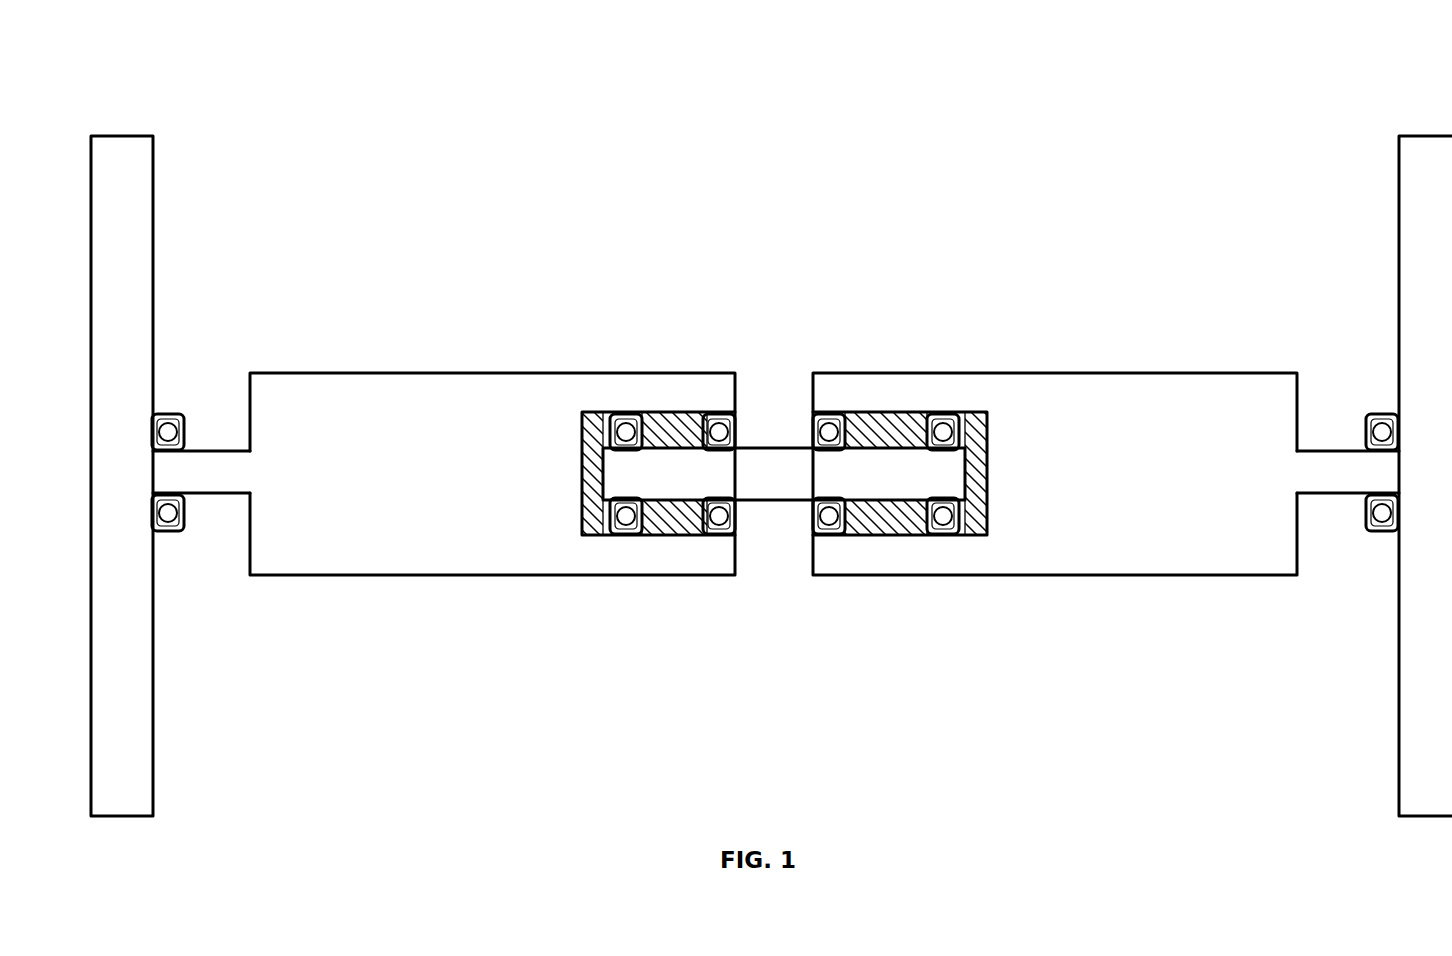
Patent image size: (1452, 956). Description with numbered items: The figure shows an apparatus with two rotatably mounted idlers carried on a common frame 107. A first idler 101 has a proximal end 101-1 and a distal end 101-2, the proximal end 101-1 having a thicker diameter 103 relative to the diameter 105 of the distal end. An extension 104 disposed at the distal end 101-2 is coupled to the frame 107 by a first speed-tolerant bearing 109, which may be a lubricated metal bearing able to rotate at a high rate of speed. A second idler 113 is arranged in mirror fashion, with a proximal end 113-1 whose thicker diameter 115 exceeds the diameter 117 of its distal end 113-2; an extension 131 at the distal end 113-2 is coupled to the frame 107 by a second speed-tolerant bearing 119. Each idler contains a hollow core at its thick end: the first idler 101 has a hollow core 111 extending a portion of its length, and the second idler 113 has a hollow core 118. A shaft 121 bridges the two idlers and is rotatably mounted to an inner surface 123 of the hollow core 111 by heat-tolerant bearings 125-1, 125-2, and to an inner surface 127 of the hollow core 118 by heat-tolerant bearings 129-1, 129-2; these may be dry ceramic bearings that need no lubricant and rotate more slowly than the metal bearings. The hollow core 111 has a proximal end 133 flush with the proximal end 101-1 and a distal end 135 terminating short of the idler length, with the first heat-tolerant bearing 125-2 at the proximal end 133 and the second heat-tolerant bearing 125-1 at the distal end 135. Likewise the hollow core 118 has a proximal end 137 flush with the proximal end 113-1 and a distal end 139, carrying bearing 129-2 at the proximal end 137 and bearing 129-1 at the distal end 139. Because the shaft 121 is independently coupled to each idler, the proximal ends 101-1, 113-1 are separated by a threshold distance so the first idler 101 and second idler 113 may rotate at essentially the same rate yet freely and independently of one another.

The first idler 101 is at (492, 474).
The proximal end of first idler 101-1 is at (735, 318).
The distal end of first idler 101-2 is at (250, 318).
The thicker diameter 103 is at (491, 388).
The extension 104 is at (210, 495).
The diameter of distal end 105 is at (262, 458).
The frame 107 is at (106, 136).
The first speed-tolerant bearing 109 is at (165, 531).
The hollow core 111 is at (662, 530).
The second idler 113 is at (1055, 474).
The proximal end of second idler 113-1 is at (1297, 318).
The distal end of second idler 113-2 is at (1390, 318).
The thicker diameter 115 is at (1128, 388).
The diameter of distal end 117 is at (1278, 458).
The hollow core 118 is at (880, 530).
The second speed-tolerant bearing 119 is at (1378, 531).
The shaft 121 is at (780, 448).
The inner surface 123 is at (664, 400).
The second heat-tolerant bearing 125-1 is at (620, 535).
The first heat-tolerant bearing 125-2 is at (718, 535).
The inner surface 127 is at (879, 400).
The second heat-tolerant bearing 129-1 is at (938, 535).
The first heat-tolerant bearing 129-2 is at (828, 535).
The extension 131 is at (1322, 495).
The proximal end of hollow core 133 is at (745, 528).
The distal end of hollow core 135 is at (570, 500).
The proximal end of hollow core 137 is at (800, 528).
The distal end of hollow core 139 is at (1000, 492).